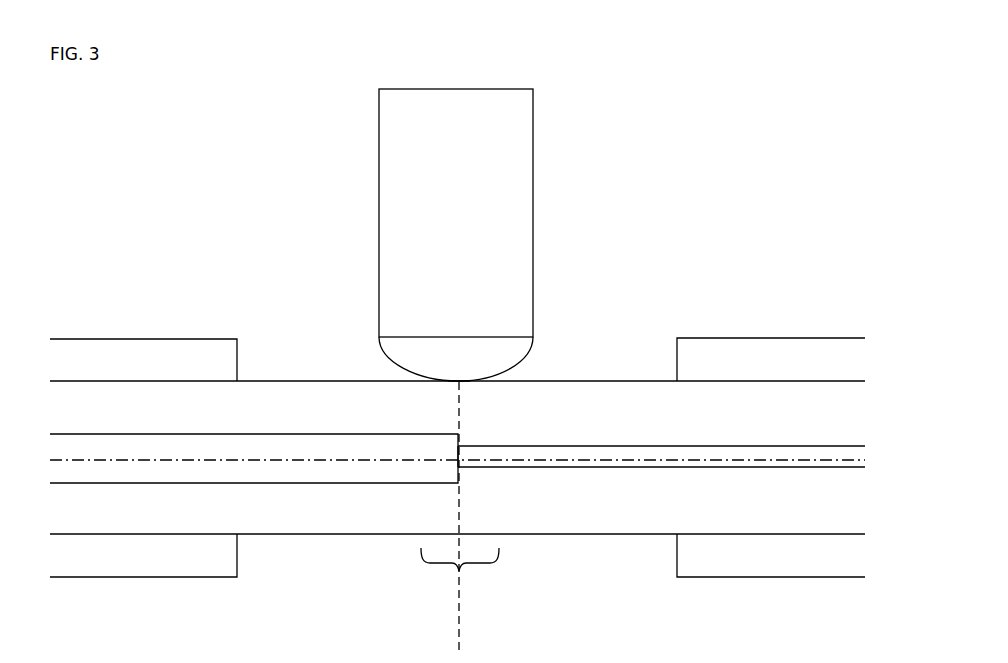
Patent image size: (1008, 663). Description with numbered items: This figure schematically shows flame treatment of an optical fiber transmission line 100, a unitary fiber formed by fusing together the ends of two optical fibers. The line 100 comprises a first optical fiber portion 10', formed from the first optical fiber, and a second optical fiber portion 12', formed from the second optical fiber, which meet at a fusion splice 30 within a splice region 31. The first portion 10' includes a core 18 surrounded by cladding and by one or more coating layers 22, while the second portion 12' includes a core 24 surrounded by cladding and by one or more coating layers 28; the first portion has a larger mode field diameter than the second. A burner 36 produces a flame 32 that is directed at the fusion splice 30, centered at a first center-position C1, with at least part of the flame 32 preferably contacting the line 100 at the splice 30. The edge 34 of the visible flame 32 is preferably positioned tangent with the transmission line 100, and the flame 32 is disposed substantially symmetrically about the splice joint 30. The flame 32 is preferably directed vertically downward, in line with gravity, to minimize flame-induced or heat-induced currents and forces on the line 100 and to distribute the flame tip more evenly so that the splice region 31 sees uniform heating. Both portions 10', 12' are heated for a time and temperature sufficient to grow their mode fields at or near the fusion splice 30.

The optical fiber transmission line 100 is at (318, 325).
The first optical fiber portion 10' is at (143, 357).
The second optical fiber portion 12' is at (771, 356).
The coating layers 22 is at (185, 568).
The coating layers 28 is at (763, 567).
The core 18 is at (355, 473).
The core 24 is at (688, 468).
The fusion splice 30 is at (460, 457).
The burner 36 is at (508, 148).
The flame 32 is at (490, 350).
The edge of the visible flame 34 is at (516, 369).
The splice region 31 is at (459, 573).
The first center-position C1 is at (472, 520).